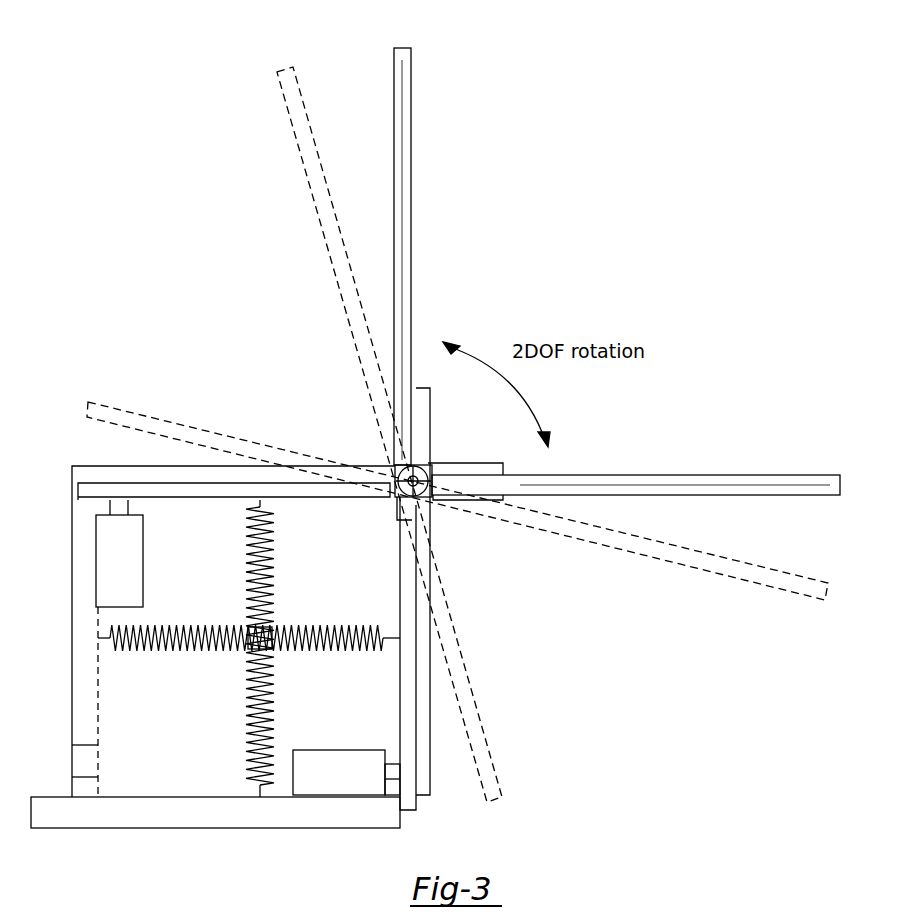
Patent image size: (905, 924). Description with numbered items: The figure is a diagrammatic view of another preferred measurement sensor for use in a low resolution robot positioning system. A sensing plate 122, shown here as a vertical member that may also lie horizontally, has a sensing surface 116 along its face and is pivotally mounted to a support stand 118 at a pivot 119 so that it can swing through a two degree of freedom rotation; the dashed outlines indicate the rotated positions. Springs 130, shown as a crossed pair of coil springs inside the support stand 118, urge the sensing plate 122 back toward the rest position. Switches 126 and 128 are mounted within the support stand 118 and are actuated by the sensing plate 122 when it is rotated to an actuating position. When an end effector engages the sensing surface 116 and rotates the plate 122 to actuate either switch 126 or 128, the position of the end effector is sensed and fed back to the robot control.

The sensing surface 116 is at (411, 217).
The support stand 118 is at (332, 820).
The pivot 119 is at (427, 462).
The sensing plate 122 is at (400, 103).
The switch 126 is at (352, 763).
The switch 128 is at (105, 563).
The spring 130 is at (288, 648).